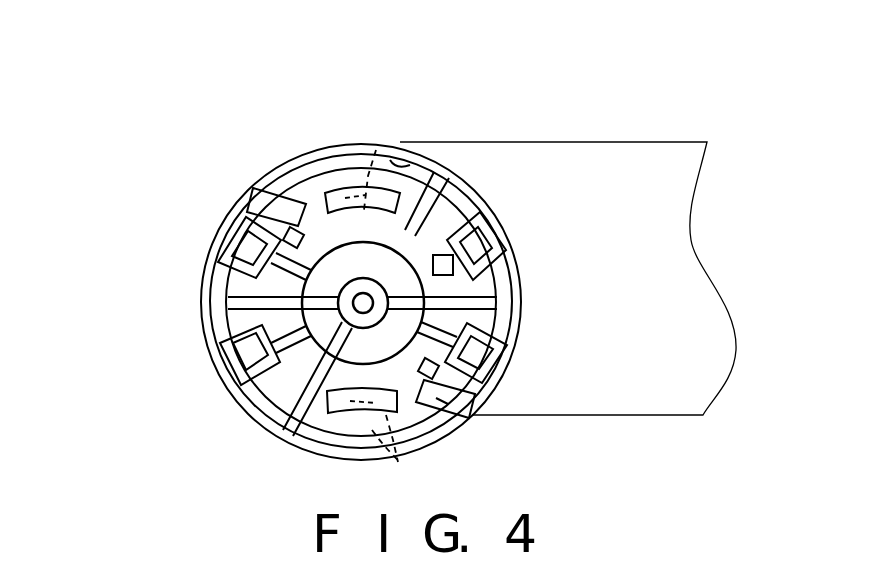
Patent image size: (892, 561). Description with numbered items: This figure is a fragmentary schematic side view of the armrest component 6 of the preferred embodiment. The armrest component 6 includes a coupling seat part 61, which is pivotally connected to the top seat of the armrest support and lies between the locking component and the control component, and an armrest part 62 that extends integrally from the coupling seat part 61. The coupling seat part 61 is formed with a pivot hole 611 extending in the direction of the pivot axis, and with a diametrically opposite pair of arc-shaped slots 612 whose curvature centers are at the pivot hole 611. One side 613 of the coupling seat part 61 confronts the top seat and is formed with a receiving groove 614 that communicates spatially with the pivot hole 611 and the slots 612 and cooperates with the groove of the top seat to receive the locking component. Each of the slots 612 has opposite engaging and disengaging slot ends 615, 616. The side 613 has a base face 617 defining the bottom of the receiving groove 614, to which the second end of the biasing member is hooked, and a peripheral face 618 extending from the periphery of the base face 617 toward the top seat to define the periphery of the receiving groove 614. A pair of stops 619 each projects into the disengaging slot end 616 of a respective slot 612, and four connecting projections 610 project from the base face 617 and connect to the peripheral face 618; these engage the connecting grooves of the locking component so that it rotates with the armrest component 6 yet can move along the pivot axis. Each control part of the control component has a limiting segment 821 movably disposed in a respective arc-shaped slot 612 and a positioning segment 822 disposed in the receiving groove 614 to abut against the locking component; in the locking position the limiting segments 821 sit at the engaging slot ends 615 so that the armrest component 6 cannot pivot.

The armrest component 6 is at (213, 120).
The coupling seat part 61 is at (496, 198).
The armrest part 62 is at (623, 170).
The connecting projections 610 is at (238, 253).
The pivot hole 611 is at (358, 306).
The arc-shaped slots 612 is at (308, 210).
The side 613 is at (296, 162).
The receiving groove 614 is at (267, 308).
The engaging slot end 615 is at (400, 467).
The disengaging slot end 616 is at (448, 404).
The base face 617 is at (437, 230).
The peripheral face 618 is at (390, 165).
The stops 619 is at (285, 240).
The limiting segment 821 is at (378, 192).
The positioning segment 822 is at (376, 150).